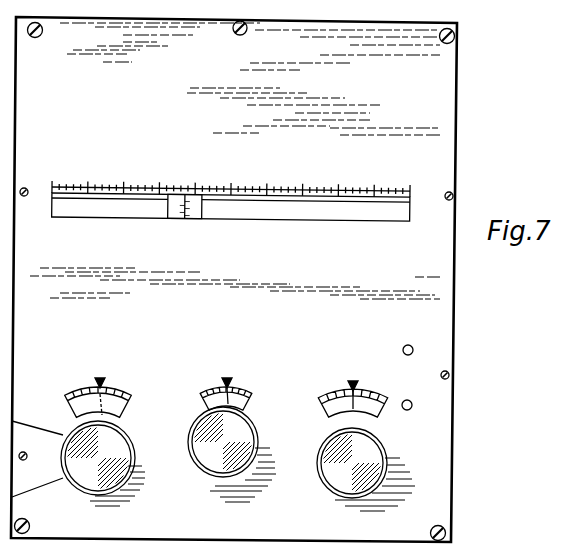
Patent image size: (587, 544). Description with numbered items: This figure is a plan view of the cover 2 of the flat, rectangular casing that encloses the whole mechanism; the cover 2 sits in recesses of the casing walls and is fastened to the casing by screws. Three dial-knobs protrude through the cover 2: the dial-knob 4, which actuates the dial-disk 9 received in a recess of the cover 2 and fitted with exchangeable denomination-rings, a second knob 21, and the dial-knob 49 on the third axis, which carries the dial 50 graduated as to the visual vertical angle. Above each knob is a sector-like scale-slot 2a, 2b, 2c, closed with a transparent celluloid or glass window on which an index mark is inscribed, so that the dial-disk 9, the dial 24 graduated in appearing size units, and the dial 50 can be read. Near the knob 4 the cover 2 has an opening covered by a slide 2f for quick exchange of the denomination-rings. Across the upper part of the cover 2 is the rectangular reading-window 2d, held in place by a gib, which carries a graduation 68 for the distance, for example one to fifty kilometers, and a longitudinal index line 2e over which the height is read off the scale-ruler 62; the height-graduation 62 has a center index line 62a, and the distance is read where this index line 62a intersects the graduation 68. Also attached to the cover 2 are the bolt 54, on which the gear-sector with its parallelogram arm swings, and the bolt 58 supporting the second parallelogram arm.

The cover 2 is at (438, 328).
The scale-slot 2a is at (107, 412).
The scale-slot 2b is at (232, 402).
The scale-slot 2c is at (365, 408).
The rectangular reading-window 2d is at (258, 218).
The longitudinal index line 2e is at (328, 205).
The slide 2f is at (33, 482).
The dial-knob 4 is at (120, 444).
The dial-disk 9 is at (82, 398).
The control knob 21 is at (243, 428).
The dial 24 is at (215, 398).
The dial-knob 49 is at (376, 452).
The dial 50 is at (342, 405).
The bolt 54 is at (411, 401).
The bolt 58 is at (414, 350).
The scale-ruler 62 is at (169, 204).
The center index line 62a is at (189, 207).
The graduation 68 is at (251, 186).